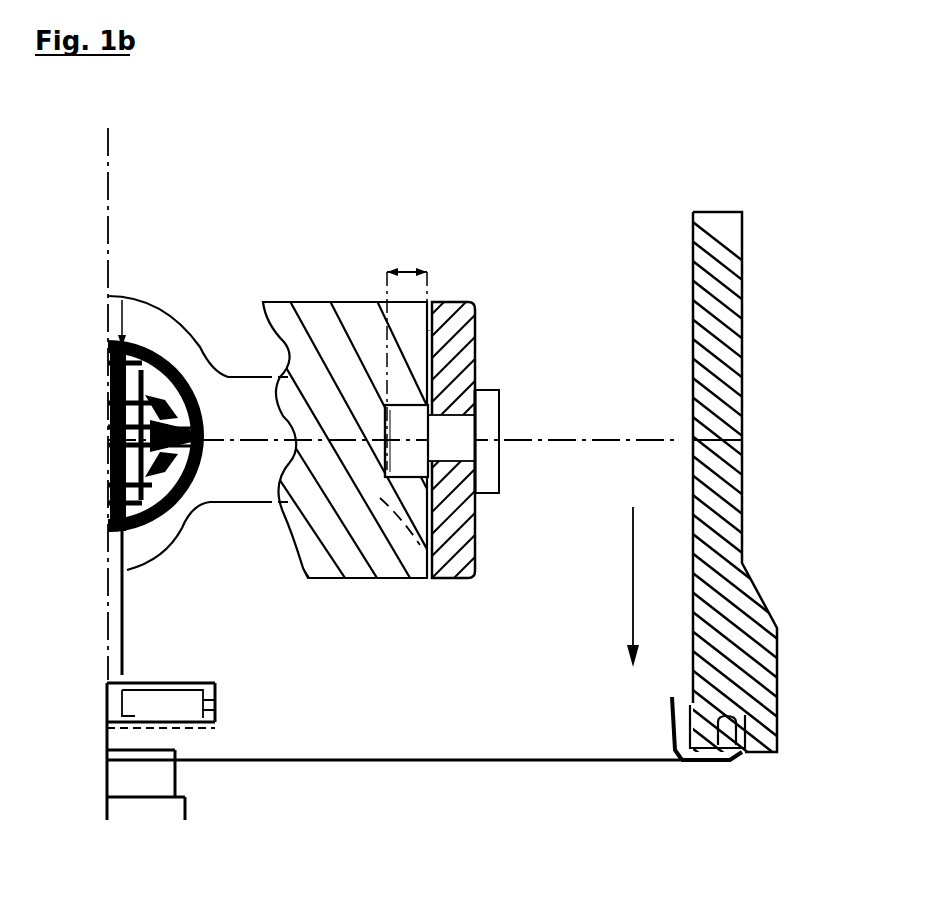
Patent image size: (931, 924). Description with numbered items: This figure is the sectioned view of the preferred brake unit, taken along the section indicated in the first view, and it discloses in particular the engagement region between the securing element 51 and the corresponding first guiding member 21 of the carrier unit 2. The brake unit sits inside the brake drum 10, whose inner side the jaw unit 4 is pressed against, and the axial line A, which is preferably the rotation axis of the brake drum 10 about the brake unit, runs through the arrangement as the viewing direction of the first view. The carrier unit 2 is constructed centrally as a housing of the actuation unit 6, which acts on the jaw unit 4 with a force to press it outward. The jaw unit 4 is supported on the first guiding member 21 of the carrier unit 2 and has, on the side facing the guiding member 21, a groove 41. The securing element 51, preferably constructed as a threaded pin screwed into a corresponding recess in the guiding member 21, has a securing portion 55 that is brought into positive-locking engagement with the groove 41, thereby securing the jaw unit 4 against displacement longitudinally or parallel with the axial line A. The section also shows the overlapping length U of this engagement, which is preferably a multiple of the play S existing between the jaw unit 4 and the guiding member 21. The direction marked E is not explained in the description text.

The axial line A is at (108, 205).
The carrier unit 2 is at (175, 313).
The jaw unit 4 is at (380, 563).
The actuation unit 6 is at (160, 483).
The brake drum 10 is at (740, 308).
The first guiding member 21 is at (477, 303).
The groove 41 is at (385, 400).
The securing element 51 is at (492, 455).
The securing portion 55 is at (410, 455).
The overlapping length U is at (412, 265).
The play S is at (443, 303).
The insertion direction E is at (633, 587).